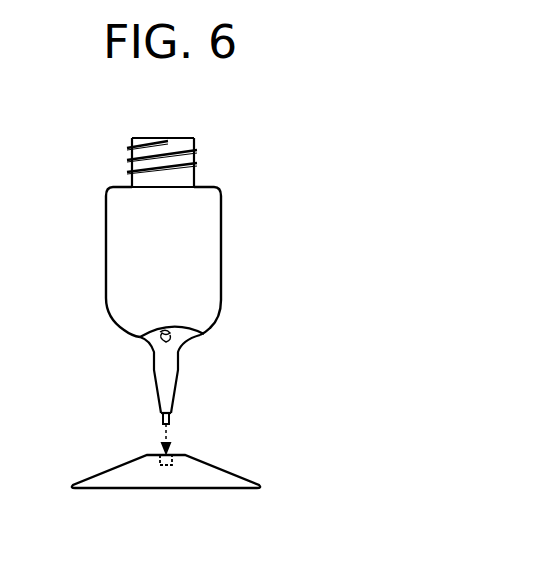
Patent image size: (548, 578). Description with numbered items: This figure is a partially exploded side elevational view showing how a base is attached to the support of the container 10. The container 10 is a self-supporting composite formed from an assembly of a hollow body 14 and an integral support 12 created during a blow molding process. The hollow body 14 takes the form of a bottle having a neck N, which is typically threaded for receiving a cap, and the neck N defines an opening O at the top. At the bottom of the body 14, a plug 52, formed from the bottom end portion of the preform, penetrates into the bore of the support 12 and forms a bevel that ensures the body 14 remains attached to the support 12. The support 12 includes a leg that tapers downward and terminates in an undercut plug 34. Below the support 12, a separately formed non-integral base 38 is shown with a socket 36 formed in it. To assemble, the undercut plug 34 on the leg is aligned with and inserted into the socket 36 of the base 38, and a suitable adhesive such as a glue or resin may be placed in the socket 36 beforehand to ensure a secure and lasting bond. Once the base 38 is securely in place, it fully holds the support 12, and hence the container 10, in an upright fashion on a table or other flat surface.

The container 10 is at (282, 172).
The neck N is at (197, 150).
The opening O is at (160, 137).
The hollow body 14 is at (202, 259).
The plug 52 is at (178, 334).
The support 12 is at (166, 389).
The plug 34 is at (172, 418).
The socket 36 is at (160, 452).
The non-integral base 38 is at (148, 478).